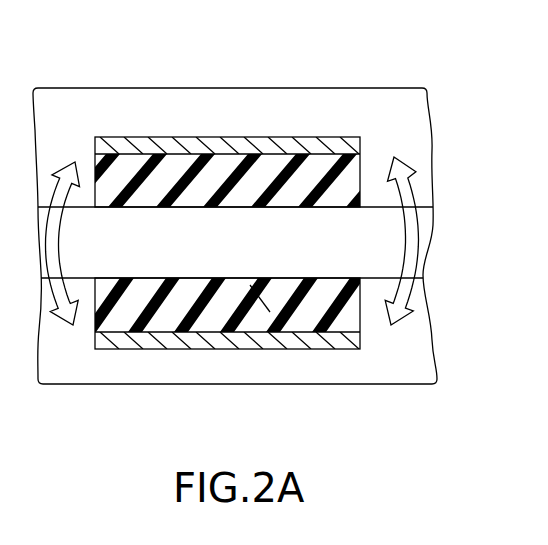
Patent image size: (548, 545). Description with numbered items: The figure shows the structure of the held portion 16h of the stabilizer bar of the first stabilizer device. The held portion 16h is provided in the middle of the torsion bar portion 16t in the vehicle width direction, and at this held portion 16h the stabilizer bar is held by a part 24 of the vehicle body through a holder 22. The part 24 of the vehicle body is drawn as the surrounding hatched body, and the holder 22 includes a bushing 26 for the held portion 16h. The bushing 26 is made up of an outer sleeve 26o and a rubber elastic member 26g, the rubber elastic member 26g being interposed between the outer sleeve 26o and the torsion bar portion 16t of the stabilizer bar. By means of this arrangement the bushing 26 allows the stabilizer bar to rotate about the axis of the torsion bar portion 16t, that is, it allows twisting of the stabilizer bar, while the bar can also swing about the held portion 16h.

The holder 22 is at (268, 232).
The part of the vehicle body 24 is at (78, 103).
The bushing 26 is at (246, 240).
The outer sleeve 26o is at (170, 144).
The rubber elastic member 26g is at (167, 320).
The torsion bar portion 16t is at (428, 219).
The held portion 16h is at (245, 281).